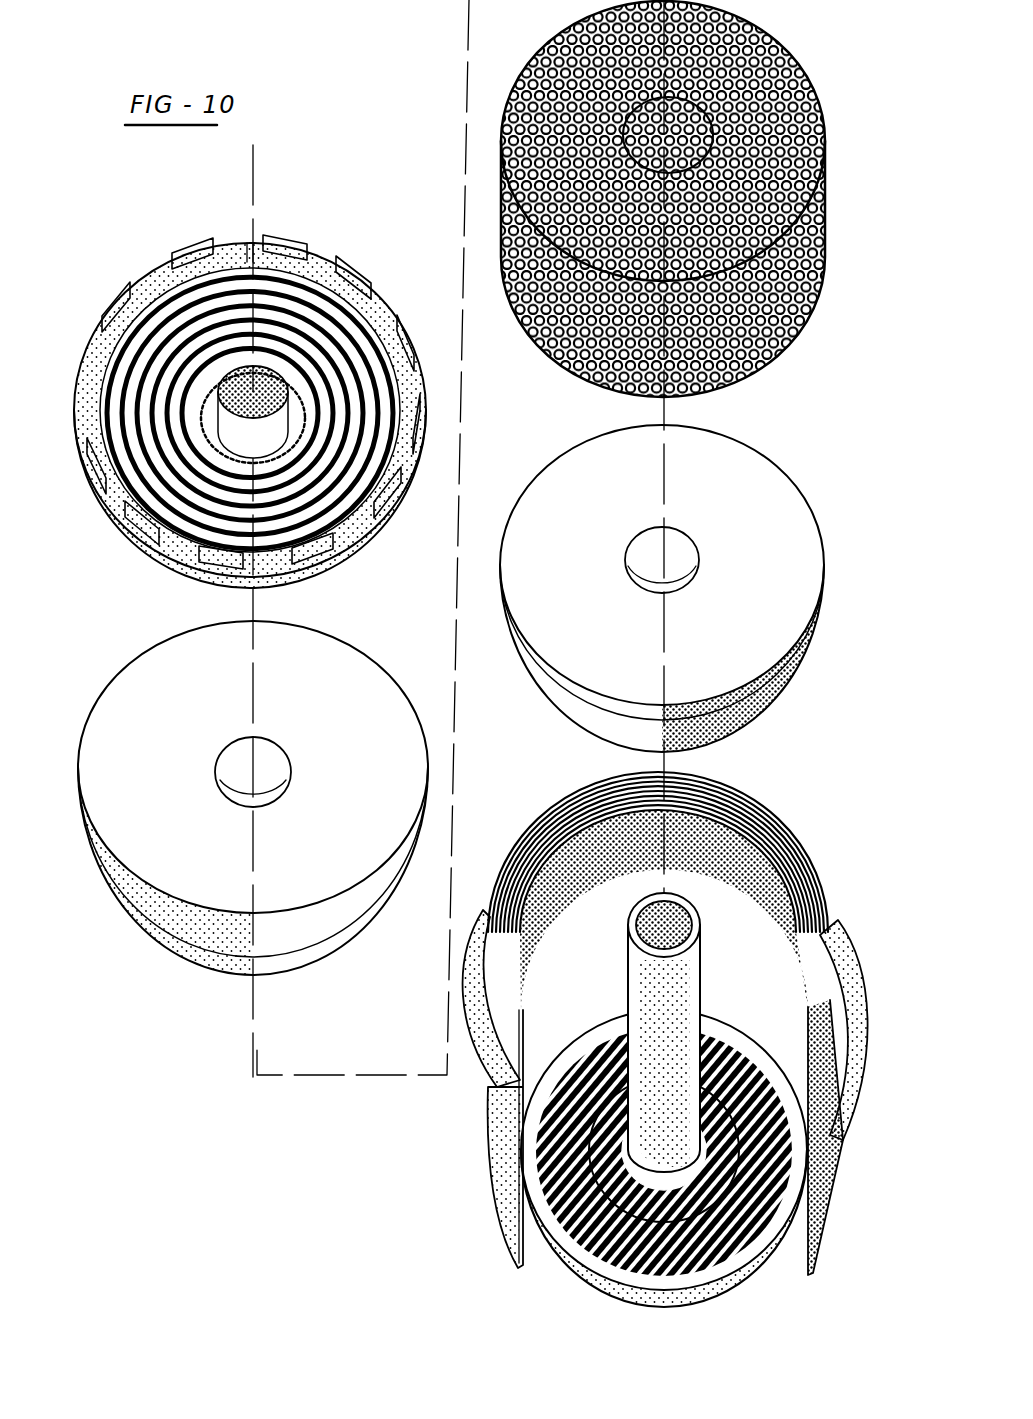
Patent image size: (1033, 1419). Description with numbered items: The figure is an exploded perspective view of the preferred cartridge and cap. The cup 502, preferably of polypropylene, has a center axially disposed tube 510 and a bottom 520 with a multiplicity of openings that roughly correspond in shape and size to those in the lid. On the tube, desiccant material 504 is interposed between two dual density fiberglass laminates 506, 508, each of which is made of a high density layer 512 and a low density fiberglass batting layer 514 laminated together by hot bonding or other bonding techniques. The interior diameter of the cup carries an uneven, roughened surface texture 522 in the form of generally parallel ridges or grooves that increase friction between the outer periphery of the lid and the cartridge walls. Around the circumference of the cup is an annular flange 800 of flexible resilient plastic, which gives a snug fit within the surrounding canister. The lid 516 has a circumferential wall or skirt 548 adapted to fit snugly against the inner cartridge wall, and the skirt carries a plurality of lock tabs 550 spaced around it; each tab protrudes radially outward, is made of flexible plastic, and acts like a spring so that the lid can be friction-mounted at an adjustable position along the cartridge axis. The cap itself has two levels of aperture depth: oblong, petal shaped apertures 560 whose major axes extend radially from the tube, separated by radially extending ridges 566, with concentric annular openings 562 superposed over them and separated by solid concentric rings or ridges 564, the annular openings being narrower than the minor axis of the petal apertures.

The cup 502 is at (848, 1140).
The desiccant material 504 is at (545, 337).
The dual density fiberglass laminate 506 is at (250, 907).
The dual density fiberglass laminate 508 is at (757, 475).
The center axially disposed tube 510 is at (700, 917).
The high density layer 512 is at (183, 948).
The low density fiberglass batting layer 514 is at (153, 902).
The lid 516 is at (272, 223).
The bottom 520 is at (747, 1287).
The uneven roughened surface texture 522 is at (747, 817).
The circumferential wall or skirt 548 is at (193, 560).
The lock tabs 550 is at (95, 323).
The petal shaped apertures 560 is at (105, 415).
The concentric annular openings 562 is at (103, 473).
The solid concentric rings or ridges 564 is at (147, 510).
The radially extending ridges 566 is at (405, 363).
The annular flange 800 is at (860, 987).